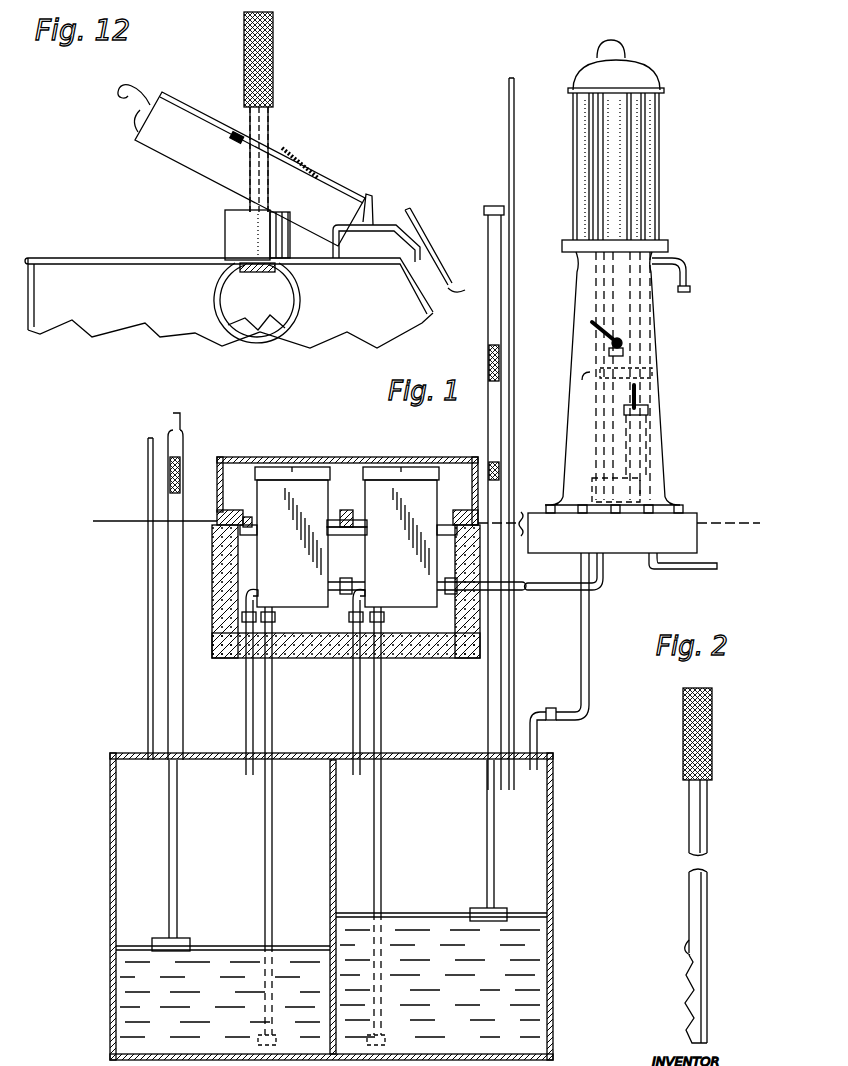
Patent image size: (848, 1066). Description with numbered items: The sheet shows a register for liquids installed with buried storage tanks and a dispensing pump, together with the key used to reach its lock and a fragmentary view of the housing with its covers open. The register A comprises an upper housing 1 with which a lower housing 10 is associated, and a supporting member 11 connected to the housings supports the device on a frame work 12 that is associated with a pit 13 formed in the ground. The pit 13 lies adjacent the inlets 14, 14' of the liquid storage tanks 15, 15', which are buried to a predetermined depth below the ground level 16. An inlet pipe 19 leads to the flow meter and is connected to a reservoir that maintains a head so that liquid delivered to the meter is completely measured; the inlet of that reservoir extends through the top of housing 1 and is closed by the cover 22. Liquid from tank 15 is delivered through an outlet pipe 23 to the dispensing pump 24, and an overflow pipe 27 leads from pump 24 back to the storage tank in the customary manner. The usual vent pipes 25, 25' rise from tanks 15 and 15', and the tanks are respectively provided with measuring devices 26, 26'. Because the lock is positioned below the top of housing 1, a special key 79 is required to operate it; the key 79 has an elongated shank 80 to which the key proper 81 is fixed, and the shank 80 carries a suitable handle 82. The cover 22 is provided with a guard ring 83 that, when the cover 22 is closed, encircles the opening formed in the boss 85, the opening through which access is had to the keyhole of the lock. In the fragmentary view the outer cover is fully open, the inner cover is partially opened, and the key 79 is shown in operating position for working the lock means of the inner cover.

In FIG. 1, the housing 1 is at (262, 495).
In FIG. 1, the register A is at (303, 489).
In FIG. 1, the lower housing 10 is at (272, 568).
In FIG. 1, the supporting member 11 is at (243, 530).
In FIG. 1, the frame work 12 is at (240, 547).
In FIG. 1, the pit 13 is at (218, 590).
In FIG. 1, the inlet 14 is at (239, 817).
In FIG. 1, the inlet 14' is at (348, 817).
In FIG. 1, the liquid storage tank 15 is at (331, 906).
In FIG. 1, the liquid storage tank 15' is at (441, 920).
In FIG. 1, the ground level 16 is at (118, 520).
In FIG. 12, the inlet pipe 19 is at (279, 120).
In FIG. 12, the cover 22 is at (190, 122).
In FIG. 1, the outlet pipe 23 is at (265, 888).
In FIG. 1, the dispensing pump 24 is at (677, 188).
In FIG. 1, the vent pipe 25 is at (125, 599).
In FIG. 1, the vent pipe 25' is at (521, 434).
In FIG. 1, the measuring device 26 is at (158, 682).
In FIG. 1, the measuring device 26' is at (501, 840).
In FIG. 1, the overflow pipe 27 is at (588, 670).
In FIG. 2, the key 79 is at (677, 863).
In FIG. 2, the shank 80 is at (705, 915).
In FIG. 2, the key proper 81 is at (705, 1000).
In FIG. 2, the handle 82 is at (710, 748).
In FIG. 12, the guard ring 83 is at (246, 138).
In FIG. 12, the boss 85 is at (243, 228).